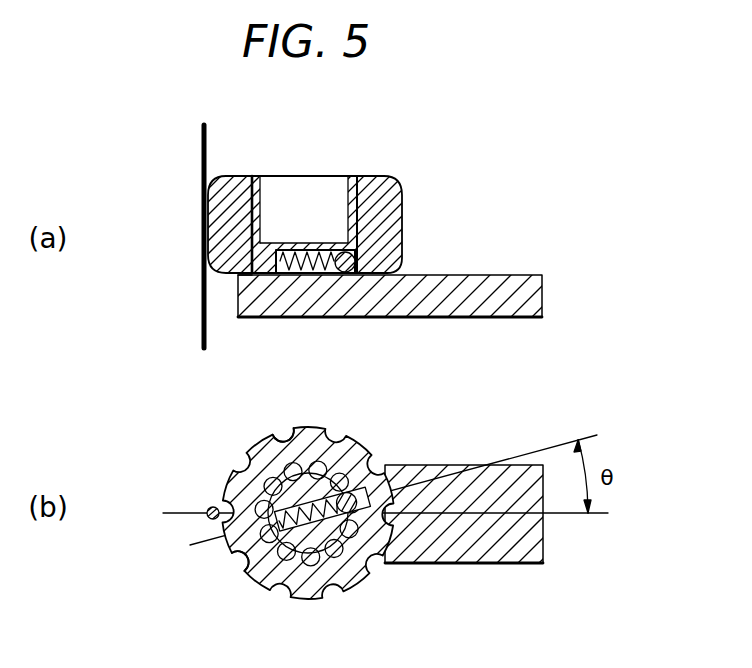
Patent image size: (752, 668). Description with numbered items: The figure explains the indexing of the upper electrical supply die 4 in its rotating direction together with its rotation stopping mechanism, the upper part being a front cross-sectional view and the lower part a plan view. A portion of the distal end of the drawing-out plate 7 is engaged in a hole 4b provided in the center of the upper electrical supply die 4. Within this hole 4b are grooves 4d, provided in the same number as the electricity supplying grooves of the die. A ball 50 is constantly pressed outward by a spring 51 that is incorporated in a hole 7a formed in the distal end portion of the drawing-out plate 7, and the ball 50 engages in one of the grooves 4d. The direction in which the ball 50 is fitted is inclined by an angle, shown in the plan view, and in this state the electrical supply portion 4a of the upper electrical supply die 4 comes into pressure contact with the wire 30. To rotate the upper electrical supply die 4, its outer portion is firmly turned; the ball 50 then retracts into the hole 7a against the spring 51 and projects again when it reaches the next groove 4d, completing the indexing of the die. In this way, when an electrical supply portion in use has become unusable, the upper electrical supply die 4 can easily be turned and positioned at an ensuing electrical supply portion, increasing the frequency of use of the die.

The upper electrical supply die 4 is at (402, 228).
The electrical supply portion 4a is at (270, 436).
The hole 4b is at (323, 190).
The grooves 4d is at (258, 572).
The drawing-out plate 7 is at (508, 305).
The hole 7a is at (358, 316).
The wire 30 is at (203, 155).
The ball 50 is at (399, 316).
The spring 51 is at (285, 272).